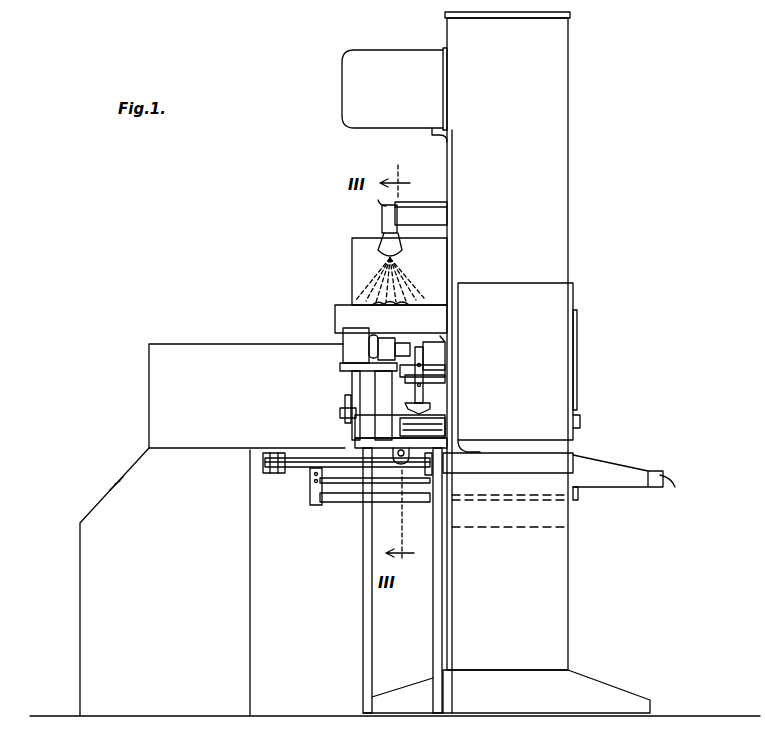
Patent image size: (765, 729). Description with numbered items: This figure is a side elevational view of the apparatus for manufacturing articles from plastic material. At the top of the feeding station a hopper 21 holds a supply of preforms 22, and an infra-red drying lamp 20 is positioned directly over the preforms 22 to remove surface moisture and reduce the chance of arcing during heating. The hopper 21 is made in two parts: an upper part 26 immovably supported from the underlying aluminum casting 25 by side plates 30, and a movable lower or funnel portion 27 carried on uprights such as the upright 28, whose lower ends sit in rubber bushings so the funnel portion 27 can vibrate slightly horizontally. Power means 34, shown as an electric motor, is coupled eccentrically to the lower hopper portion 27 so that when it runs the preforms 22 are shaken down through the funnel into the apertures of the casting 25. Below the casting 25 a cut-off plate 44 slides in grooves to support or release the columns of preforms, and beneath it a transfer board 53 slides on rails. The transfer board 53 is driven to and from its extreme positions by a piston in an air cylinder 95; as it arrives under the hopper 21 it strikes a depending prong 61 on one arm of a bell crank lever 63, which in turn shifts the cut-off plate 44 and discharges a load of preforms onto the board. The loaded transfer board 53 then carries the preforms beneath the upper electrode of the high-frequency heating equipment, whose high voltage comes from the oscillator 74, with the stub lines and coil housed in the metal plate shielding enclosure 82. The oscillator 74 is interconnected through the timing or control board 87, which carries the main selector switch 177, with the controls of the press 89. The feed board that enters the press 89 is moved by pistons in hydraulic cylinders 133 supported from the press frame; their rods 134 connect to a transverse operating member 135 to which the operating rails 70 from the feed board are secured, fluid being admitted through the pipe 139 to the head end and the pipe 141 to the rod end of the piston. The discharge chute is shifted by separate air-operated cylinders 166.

The infra-red drying lamp 20 is at (383, 232).
The hopper 21 is at (344, 315).
The preforms 22 is at (398, 303).
The casting 25 is at (420, 391).
The upper part of hopper 26 is at (437, 313).
The lower or funnel portion of hopper 27 is at (440, 350).
The upright 28 is at (424, 385).
The side plates 30 is at (427, 368).
The power means (electric motor) 34 is at (352, 343).
The cut-off plate 44 is at (350, 404).
The transfer board 53 is at (430, 426).
The depending prong 61 is at (412, 411).
The bell crank lever 63 is at (342, 418).
The operating rails 70 is at (290, 473).
The oscillator 74 is at (75, 588).
The metal plate shielding enclosure 82 is at (207, 350).
The timing board (control board) 87 is at (566, 294).
The press 89 is at (532, 219).
The air cylinder 95 is at (393, 452).
The hydraulic cylinders 133 is at (515, 467).
The piston rods 134 is at (315, 467).
The transverse operating member 135 is at (266, 457).
The pipe to head end of piston 139 is at (575, 444).
The pipe to rod end of piston 141 is at (472, 450).
The cylinders 166 is at (340, 498).
The main selector switch 177 is at (580, 420).